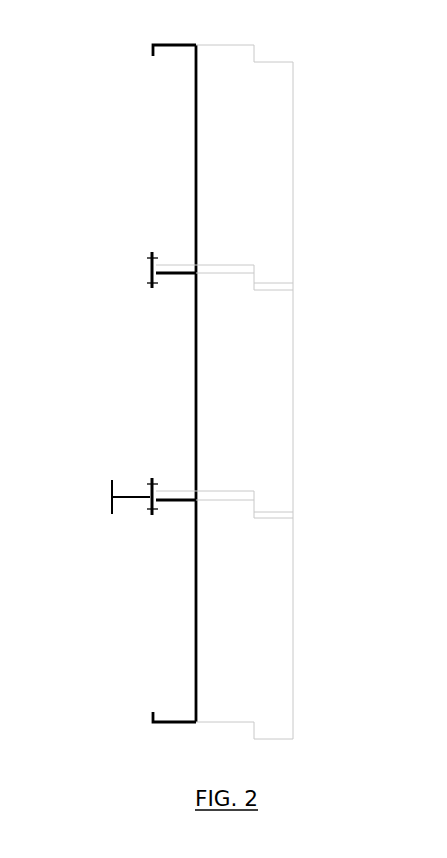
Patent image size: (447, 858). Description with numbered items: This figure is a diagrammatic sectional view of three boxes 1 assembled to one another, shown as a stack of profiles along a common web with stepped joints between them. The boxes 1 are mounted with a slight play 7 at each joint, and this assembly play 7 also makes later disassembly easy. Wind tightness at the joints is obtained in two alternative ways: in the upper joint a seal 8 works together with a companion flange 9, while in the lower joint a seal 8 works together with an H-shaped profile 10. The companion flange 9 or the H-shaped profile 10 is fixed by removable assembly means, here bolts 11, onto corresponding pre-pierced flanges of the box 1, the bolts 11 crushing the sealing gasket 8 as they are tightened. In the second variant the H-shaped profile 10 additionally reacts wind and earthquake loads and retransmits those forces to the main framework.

The box 1 is at (261, 392).
The play 7 is at (297, 289).
The seal 8 is at (140, 430).
The companion flange 9 is at (147, 268).
The H-shaped profile 10 is at (100, 497).
The bolt 11 is at (132, 348).